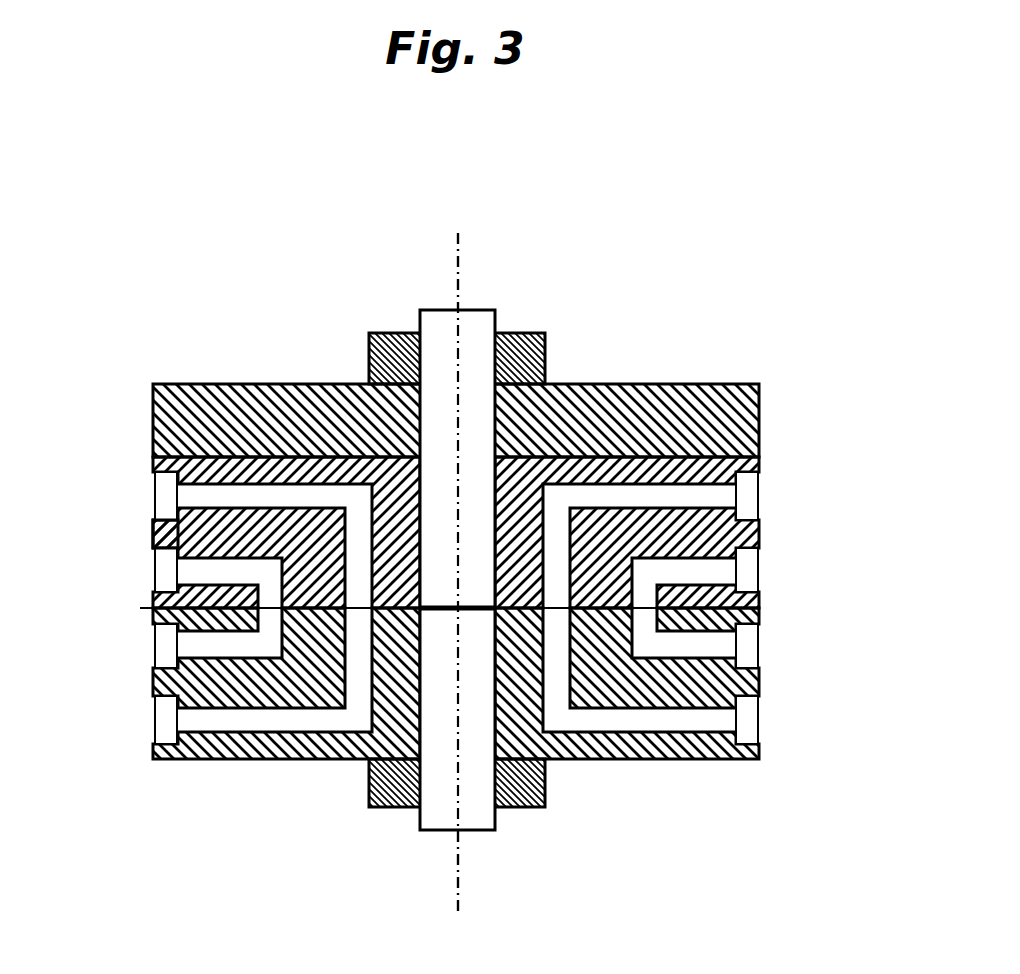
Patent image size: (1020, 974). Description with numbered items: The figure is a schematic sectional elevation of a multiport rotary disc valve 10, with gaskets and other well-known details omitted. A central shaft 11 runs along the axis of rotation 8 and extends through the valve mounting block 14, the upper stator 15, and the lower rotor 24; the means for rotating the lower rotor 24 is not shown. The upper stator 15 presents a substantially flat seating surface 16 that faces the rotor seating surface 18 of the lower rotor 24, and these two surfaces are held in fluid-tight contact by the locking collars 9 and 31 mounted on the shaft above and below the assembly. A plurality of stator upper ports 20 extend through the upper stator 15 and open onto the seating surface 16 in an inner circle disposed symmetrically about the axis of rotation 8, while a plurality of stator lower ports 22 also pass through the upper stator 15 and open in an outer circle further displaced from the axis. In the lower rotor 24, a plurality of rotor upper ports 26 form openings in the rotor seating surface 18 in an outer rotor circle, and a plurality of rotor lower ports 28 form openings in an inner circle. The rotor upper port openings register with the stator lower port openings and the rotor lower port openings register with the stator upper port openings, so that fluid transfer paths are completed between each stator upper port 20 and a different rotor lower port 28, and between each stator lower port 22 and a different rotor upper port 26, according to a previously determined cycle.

The axis of rotation 8 is at (458, 285).
The locking collar 9 is at (545, 362).
The rotary valve 10 is at (457, 569).
The central shaft 11 is at (495, 310).
The valve mounting block 14 is at (160, 384).
The upper stator 15 is at (150, 532).
The substantially flat seating surface 16 is at (548, 600).
The rotor seating surface 18 is at (390, 617).
The stator upper ports 20 is at (762, 492).
The stator lower ports 22 is at (760, 568).
The lower rotor 24 is at (248, 762).
The rotor upper ports 26 is at (759, 643).
The rotor lower ports 28 is at (759, 732).
The locking collar 31 is at (548, 780).